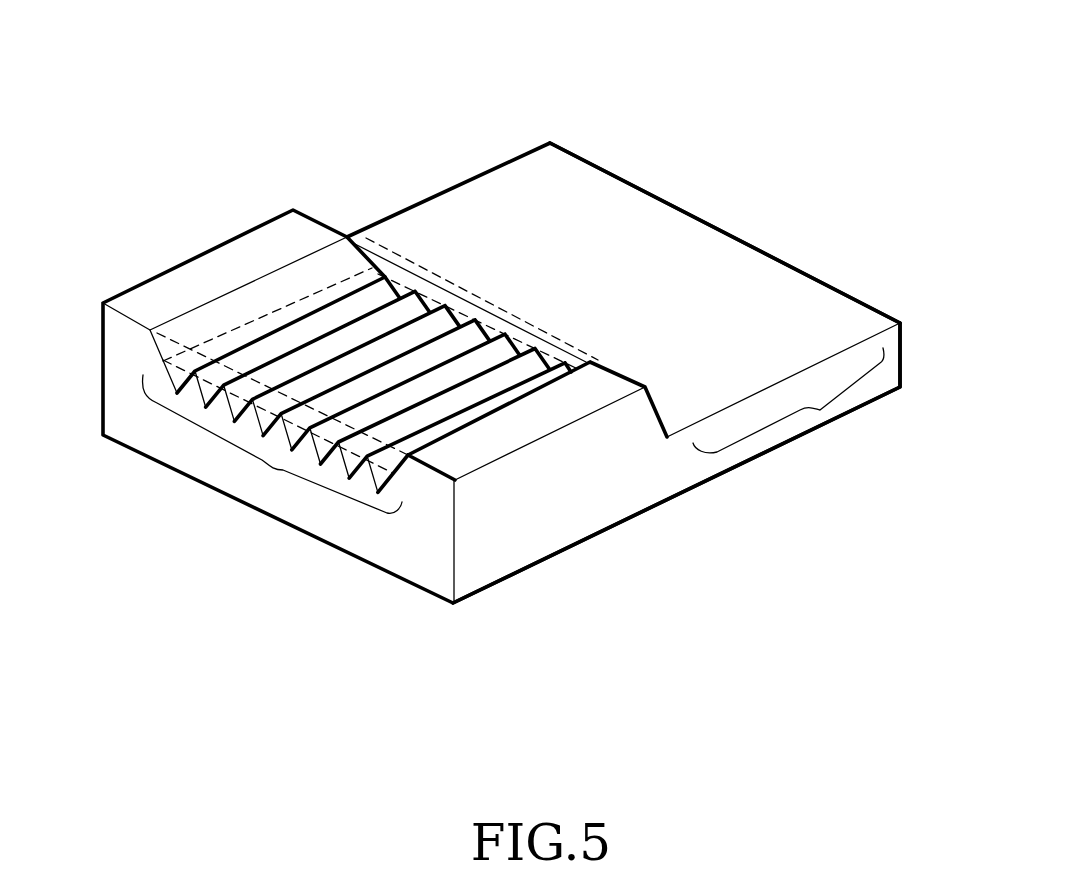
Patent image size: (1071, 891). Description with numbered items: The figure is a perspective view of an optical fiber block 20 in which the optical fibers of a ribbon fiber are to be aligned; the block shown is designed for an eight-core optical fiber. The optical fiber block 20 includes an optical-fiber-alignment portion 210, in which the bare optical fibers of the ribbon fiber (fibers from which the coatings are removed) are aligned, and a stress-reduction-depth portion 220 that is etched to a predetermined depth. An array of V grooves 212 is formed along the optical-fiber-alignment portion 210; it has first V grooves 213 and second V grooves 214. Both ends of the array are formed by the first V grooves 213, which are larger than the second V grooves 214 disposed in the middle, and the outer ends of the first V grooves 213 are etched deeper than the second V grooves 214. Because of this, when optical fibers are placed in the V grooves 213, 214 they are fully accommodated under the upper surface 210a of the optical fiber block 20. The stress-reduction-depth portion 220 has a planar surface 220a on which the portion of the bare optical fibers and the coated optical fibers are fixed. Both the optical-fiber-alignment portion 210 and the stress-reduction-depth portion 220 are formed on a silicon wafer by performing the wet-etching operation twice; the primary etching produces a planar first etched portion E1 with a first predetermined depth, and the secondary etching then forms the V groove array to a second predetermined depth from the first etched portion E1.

The optical fiber block 20 is at (450, 64).
The optical-fiber-alignment portion 210 is at (281, 200).
The upper surface 210a is at (294, 226).
The array of V grooves 212 is at (270, 468).
The first V grooves 213 is at (165, 370).
The second V grooves 214 is at (473, 303).
The stress-reduction-depth portion 220 is at (815, 412).
The planar surface 220a is at (757, 275).
The first etched portion E1 is at (163, 342).